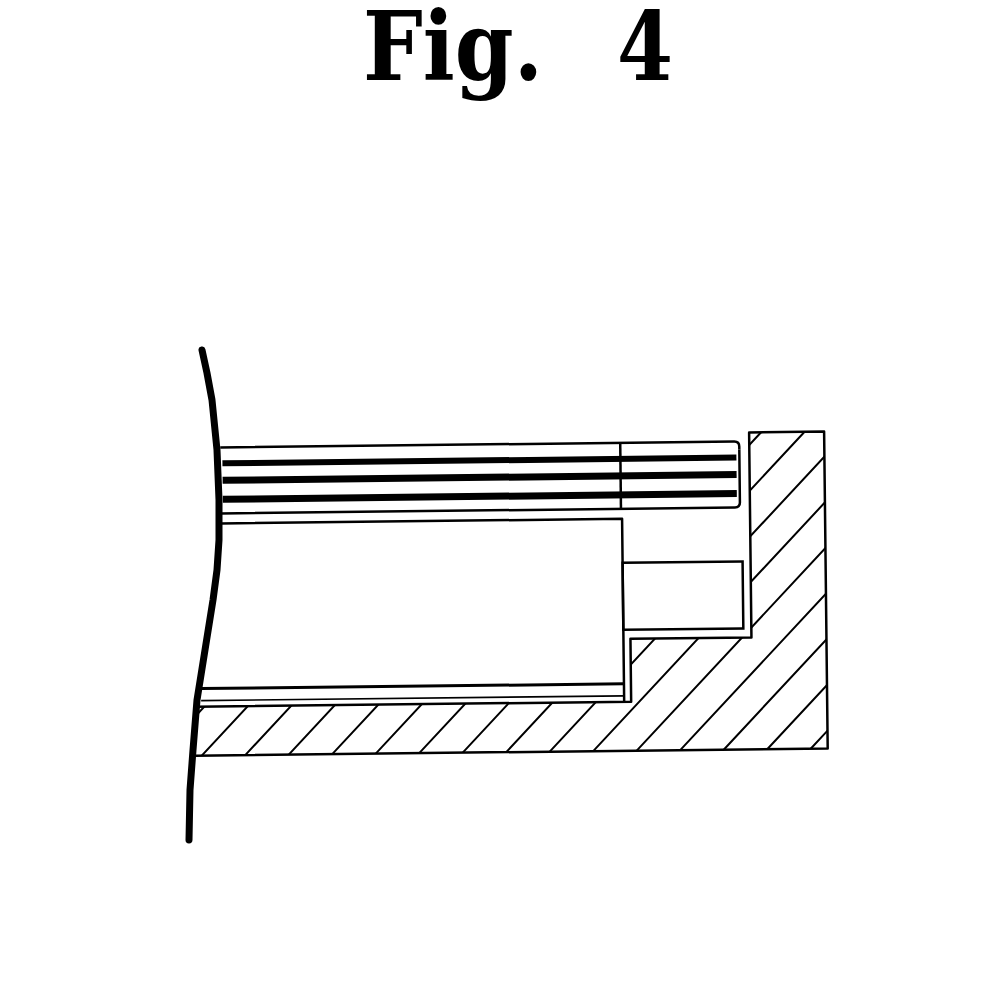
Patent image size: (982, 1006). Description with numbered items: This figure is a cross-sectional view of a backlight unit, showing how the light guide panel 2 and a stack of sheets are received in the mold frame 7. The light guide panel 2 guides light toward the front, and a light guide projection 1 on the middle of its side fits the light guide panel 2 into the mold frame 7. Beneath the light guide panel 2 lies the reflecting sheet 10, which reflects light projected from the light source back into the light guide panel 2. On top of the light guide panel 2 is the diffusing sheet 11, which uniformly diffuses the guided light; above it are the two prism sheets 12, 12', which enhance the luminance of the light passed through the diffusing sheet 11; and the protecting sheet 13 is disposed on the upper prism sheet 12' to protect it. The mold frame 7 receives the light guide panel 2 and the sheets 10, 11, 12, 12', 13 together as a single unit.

The light guide projection 1 is at (697, 602).
The light guide panel 2 is at (257, 612).
The mold frame 7 is at (742, 703).
The reflecting sheet 10 is at (237, 696).
The diffusing sheet 11 is at (217, 507).
The prism sheet 12 is at (399, 509).
The prism sheet 12' is at (399, 456).
The protecting sheet 13 is at (213, 452).